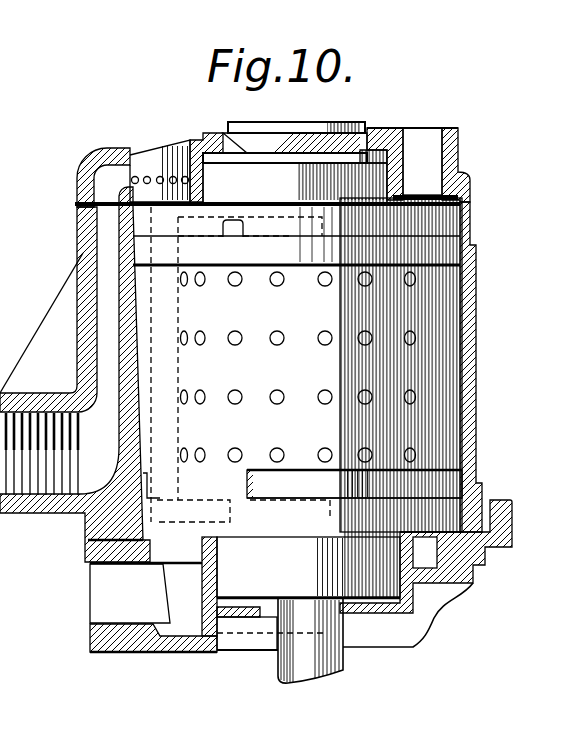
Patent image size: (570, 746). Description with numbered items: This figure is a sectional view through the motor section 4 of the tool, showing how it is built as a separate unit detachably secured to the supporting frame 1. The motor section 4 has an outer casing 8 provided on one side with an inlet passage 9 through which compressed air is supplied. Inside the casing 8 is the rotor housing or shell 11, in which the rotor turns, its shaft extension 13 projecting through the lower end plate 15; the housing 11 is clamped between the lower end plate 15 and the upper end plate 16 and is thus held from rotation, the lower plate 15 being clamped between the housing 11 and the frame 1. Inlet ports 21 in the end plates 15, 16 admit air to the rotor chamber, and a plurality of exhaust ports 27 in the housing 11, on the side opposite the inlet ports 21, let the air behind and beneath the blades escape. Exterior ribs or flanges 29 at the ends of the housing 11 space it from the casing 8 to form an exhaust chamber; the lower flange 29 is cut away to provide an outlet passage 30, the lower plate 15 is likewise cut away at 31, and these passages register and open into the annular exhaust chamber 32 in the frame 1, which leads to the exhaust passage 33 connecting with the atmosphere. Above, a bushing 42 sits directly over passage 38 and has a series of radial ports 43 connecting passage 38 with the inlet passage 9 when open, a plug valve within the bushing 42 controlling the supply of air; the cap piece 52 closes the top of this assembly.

The supporting frame 1 is at (524, 532).
The motor section 4 is at (486, 326).
The outer casing 8 is at (78, 347).
The inlet passage 9 is at (108, 292).
The rotor housing 11 is at (427, 373).
The shaft extension 13 is at (290, 656).
The lower end plate 15 is at (443, 512).
The upper end plate 16 is at (443, 218).
The inlet port 21 is at (267, 234).
The exhaust port 27 is at (322, 332).
The exterior rib or flange 29 is at (473, 248).
The outlet passage 30 is at (224, 476).
The cut-away passage 31 is at (222, 531).
The annular exhaust chamber 32 is at (173, 653).
The exhaust passage 33 is at (113, 600).
The passage 38 is at (160, 317).
The bushing 42 is at (130, 172).
The radial port 43 is at (131, 181).
The cap plate 52 is at (238, 128).